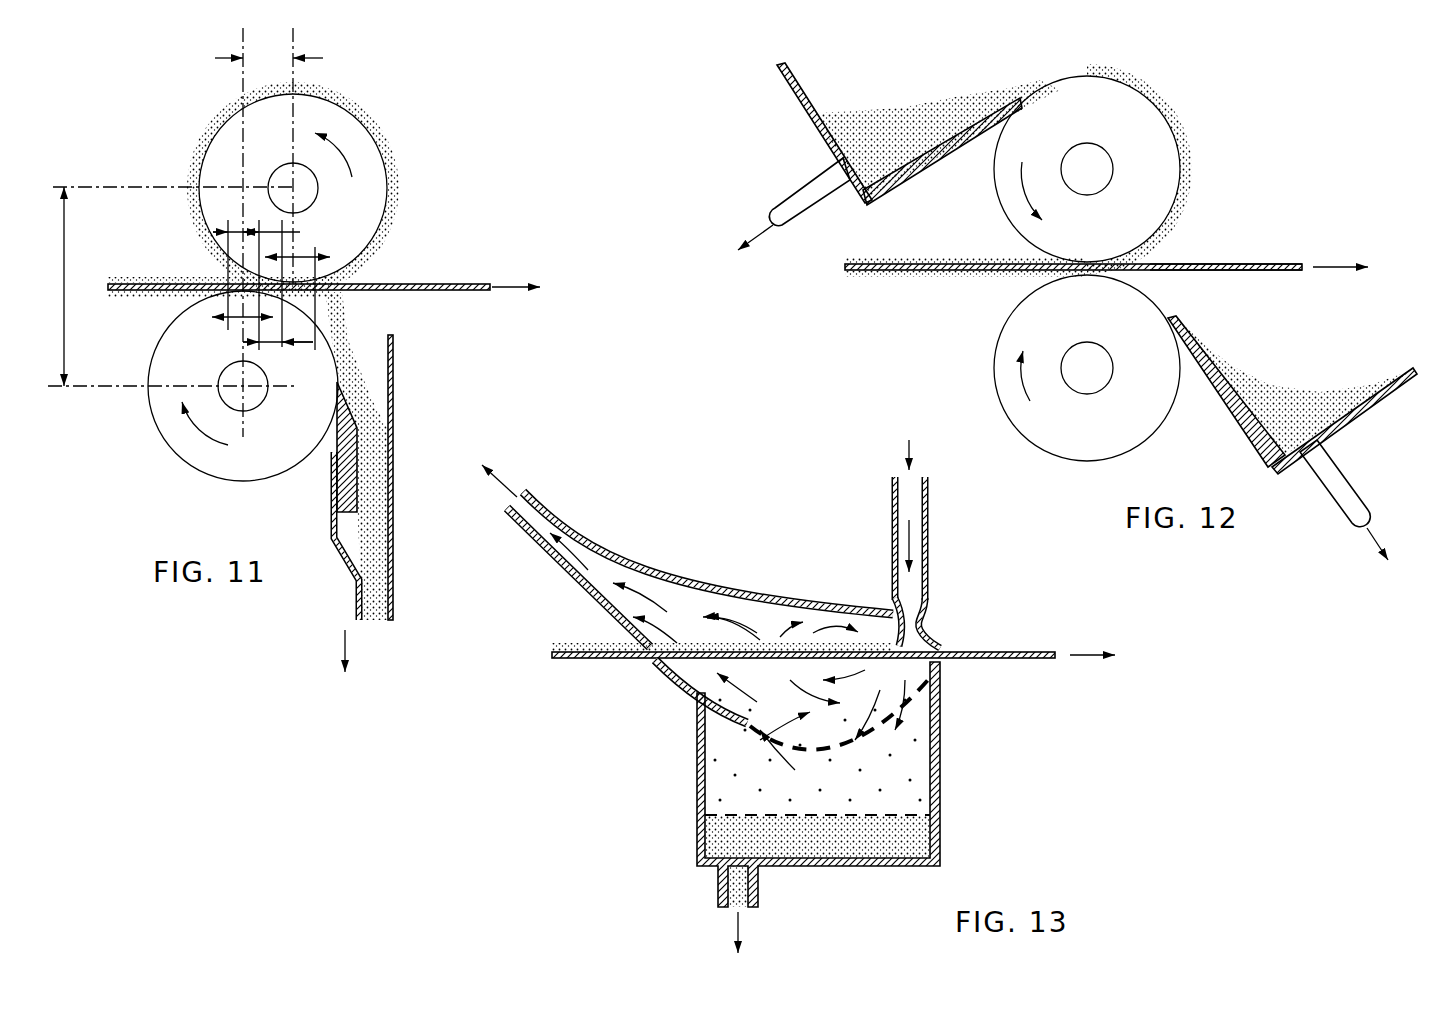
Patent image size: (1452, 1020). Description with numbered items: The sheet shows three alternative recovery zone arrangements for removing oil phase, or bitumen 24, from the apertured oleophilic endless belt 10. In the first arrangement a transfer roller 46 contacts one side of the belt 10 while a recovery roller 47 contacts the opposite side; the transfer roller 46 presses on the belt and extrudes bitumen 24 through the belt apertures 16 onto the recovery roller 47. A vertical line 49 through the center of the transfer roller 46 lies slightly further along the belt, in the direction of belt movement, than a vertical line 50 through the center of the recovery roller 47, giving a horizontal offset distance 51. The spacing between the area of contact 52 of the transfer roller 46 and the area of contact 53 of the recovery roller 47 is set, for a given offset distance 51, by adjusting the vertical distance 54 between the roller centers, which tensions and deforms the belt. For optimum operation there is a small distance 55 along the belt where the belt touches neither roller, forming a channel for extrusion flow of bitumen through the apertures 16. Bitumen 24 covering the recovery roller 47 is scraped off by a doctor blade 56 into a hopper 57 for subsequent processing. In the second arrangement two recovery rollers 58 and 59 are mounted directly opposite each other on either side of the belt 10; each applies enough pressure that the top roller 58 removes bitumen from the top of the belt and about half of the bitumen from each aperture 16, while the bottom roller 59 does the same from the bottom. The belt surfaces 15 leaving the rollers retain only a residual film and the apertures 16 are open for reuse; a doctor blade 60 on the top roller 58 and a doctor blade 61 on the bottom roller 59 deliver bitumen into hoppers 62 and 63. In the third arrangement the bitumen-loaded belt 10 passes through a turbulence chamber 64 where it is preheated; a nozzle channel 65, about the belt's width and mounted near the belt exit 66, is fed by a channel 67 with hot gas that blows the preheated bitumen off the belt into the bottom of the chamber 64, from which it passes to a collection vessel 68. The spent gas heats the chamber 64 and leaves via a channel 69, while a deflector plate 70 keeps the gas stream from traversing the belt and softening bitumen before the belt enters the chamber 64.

In FIG. 11, the apertured oleophilic endless belt 10 is at (452, 280).
In FIG. 12, the apertured oleophilic endless belt 10 is at (1252, 262).
In FIG. 13, the apertured oleophilic endless belt 10 is at (1028, 668).
In FIG. 12, the belt surfaces 15 is at (1272, 264).
In FIG. 12, the belt apertures 16 is at (1290, 272).
In FIG. 11, the bitumen 24 is at (392, 140).
In FIG. 12, the bitumen 24 is at (1003, 85).
In FIG. 13, the bitumen 24 is at (583, 662).
In FIG. 11, the transfer roller 46 is at (341, 221).
In FIG. 11, the recovery roller 47 is at (266, 447).
In FIG. 11, the vertical line through center of transfer roller 49 is at (293, 77).
In FIG. 11, the vertical line through center of recovery roller 50 is at (243, 80).
In FIG. 11, the horizontal offset distance 51 is at (276, 55).
In FIG. 11, the area of contact of transfer roller 52 is at (300, 256).
In FIG. 11, the area of contact of recovery roller 53 is at (243, 228).
In FIG. 11, the vertical distance between rollers 54 is at (64, 262).
In FIG. 11, the small distance along the belt 55 is at (256, 222).
In FIG. 11, the doctor blade 56 is at (338, 440).
In FIG. 11, the hopper 57 is at (393, 540).
In FIG. 12, the top recovery roller 58 is at (1103, 132).
In FIG. 12, the bottom recovery roller 59 is at (1100, 326).
In FIG. 12, the doctor blade 60 is at (938, 160).
In FIG. 12, the doctor blade 61 is at (1225, 398).
In FIG. 12, the hopper 62 is at (797, 103).
In FIG. 12, the hopper 63 is at (1355, 405).
In FIG. 13, the turbulence chamber 64 is at (763, 620).
In FIG. 13, the nozzle channel 65 is at (922, 628).
In FIG. 13, the belt exit 66 is at (940, 648).
In FIG. 13, the hot gas feed channel 67 is at (905, 478).
In FIG. 13, the collection vessel 68 is at (725, 815).
In FIG. 13, the gas removal channel 69 is at (514, 497).
In FIG. 13, the deflector plate 70 is at (670, 670).